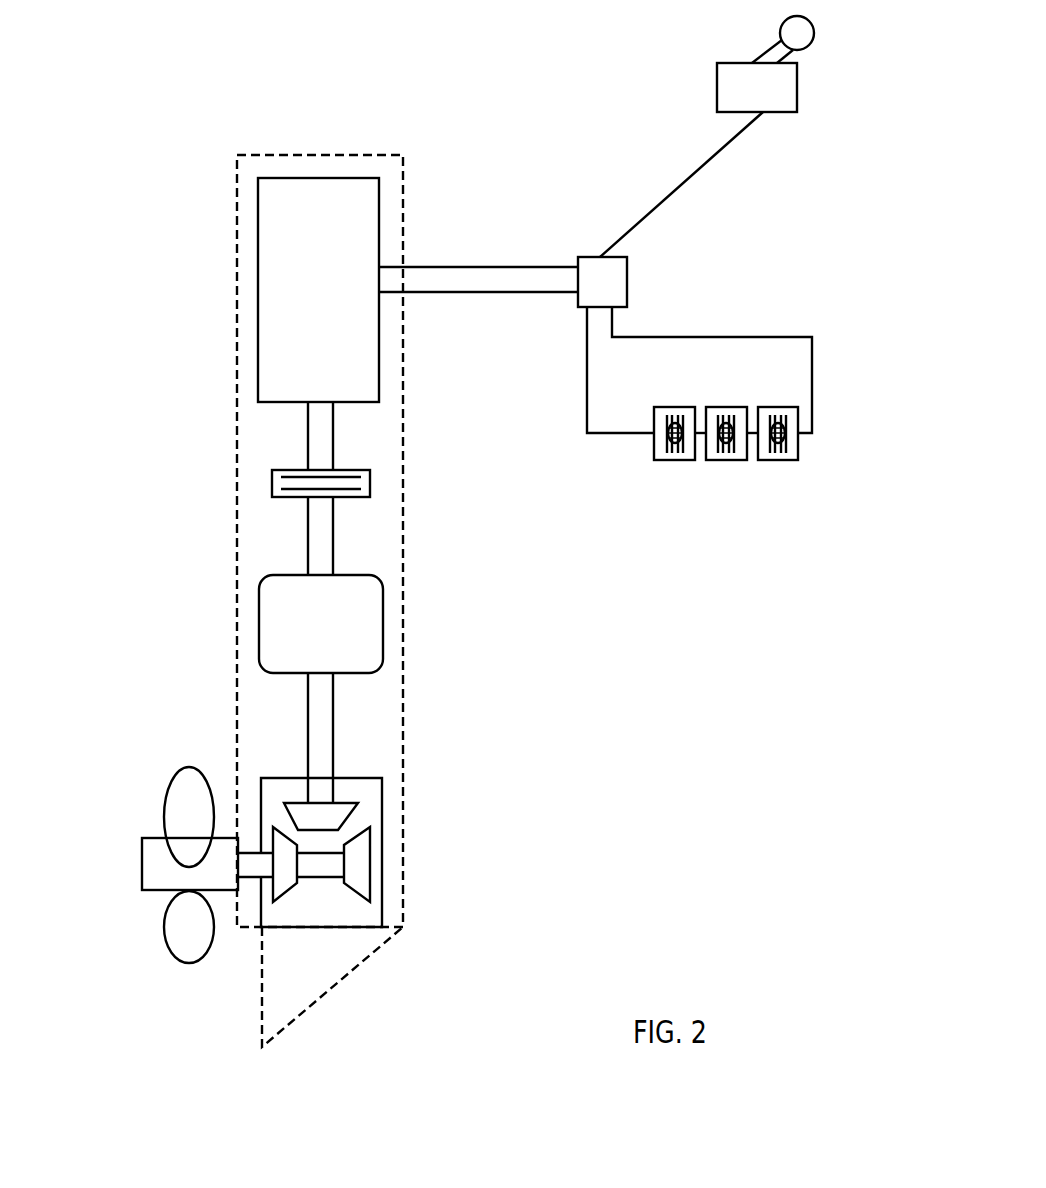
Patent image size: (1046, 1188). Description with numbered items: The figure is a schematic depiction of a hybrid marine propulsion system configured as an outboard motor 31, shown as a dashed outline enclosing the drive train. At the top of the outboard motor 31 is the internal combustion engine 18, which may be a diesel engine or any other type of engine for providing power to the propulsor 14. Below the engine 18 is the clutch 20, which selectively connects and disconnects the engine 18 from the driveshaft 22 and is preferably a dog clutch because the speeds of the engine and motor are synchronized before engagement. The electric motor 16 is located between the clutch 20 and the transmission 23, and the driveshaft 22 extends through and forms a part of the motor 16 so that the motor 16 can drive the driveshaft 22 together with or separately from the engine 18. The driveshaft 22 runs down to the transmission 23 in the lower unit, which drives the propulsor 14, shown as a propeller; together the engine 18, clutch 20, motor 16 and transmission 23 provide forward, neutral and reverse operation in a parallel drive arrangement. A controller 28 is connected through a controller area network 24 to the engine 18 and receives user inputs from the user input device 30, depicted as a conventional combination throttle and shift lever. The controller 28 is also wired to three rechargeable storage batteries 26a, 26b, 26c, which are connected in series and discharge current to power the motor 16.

The propulsor 14 is at (150, 858).
The electric motor 16 is at (272, 630).
The internal combustion engine 18 is at (286, 291).
The clutch 20 is at (268, 483).
The driveshaft 22 is at (328, 738).
The transmission 23 is at (340, 913).
The controller area network 24 is at (502, 267).
The rechargeable storage battery 26a is at (670, 460).
The rechargeable storage battery 26b is at (725, 460).
The rechargeable storage battery 26c is at (780, 460).
The controller 28 is at (608, 283).
The user input device 30 is at (787, 84).
The outboard motor 31 is at (403, 628).